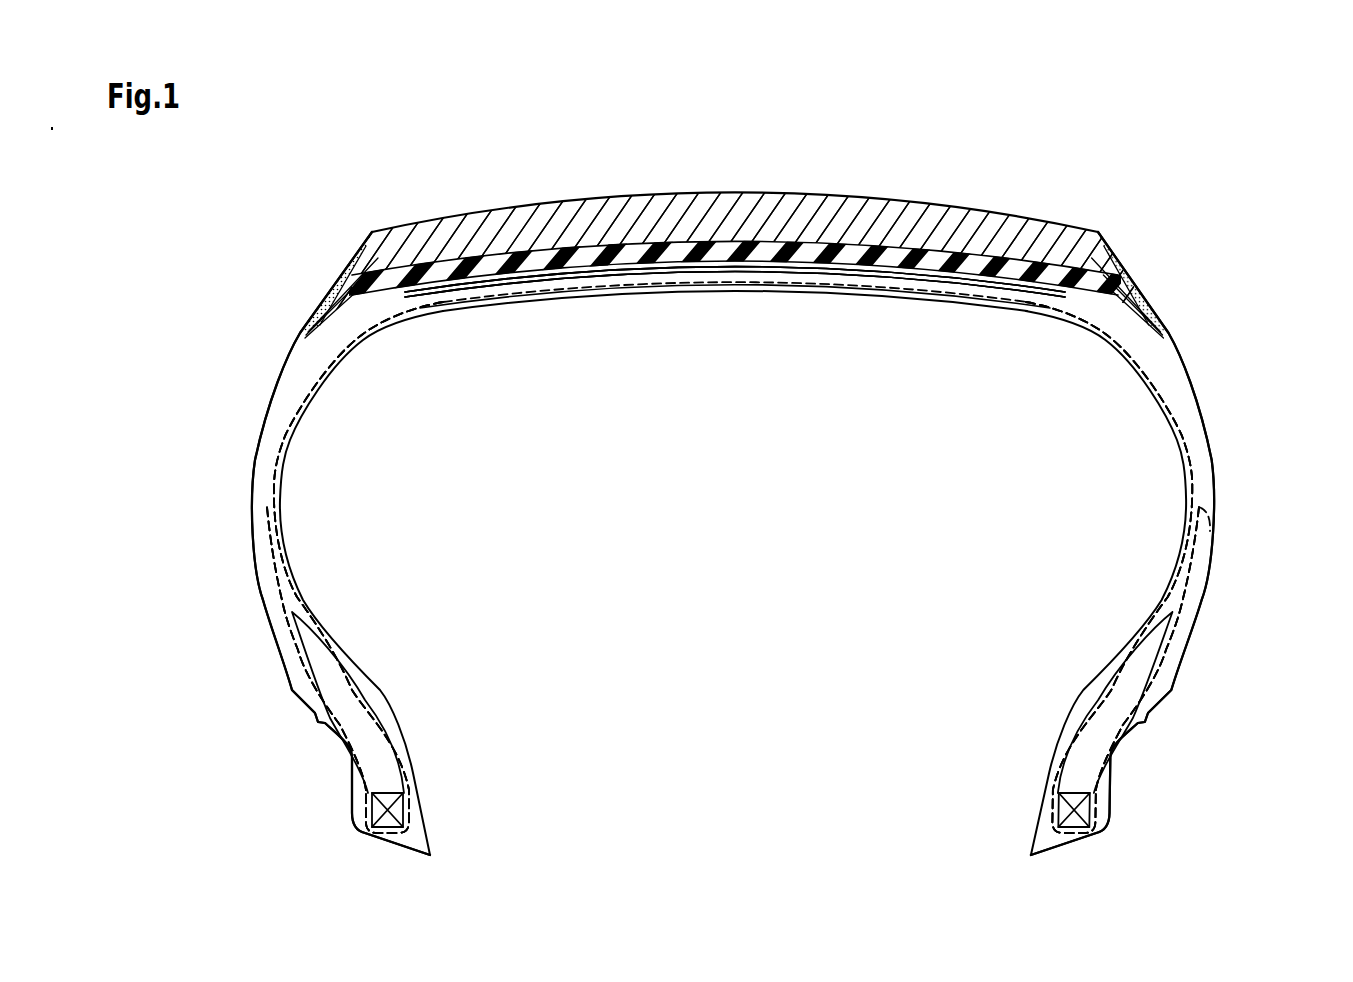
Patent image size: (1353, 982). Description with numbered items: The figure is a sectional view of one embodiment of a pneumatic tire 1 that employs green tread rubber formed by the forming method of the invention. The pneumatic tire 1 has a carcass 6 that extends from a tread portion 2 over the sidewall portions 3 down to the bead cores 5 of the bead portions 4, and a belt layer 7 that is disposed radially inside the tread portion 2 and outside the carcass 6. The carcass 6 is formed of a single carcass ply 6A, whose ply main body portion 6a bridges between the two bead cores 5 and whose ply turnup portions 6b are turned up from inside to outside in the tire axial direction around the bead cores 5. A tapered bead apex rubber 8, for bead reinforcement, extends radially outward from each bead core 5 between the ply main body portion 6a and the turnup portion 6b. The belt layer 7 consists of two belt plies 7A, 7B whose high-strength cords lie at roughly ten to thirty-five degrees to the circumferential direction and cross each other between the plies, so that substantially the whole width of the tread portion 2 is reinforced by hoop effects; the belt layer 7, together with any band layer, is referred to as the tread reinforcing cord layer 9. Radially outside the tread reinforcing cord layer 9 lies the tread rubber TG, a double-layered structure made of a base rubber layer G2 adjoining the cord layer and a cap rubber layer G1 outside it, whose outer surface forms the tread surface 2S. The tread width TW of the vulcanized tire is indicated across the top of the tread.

The pneumatic tire 1 is at (1198, 288).
The tread portion 2 is at (648, 224).
The tread surface 2S is at (578, 193).
The sidewall portion 3 is at (1237, 444).
The bead portion 4 is at (1021, 756).
The bead core 5 is at (1063, 812).
The carcass 6 is at (1055, 458).
The carcass ply 6A is at (734, 567).
The ply main body portion 6a is at (1183, 448).
The ply turnup portion 6b is at (1198, 503).
The belt layer 7 is at (668, 452).
The belt ply 7A is at (575, 274).
The belt ply 7B is at (637, 268).
The bead apex rubber 8 is at (1125, 685).
The tread reinforcing cord layer 9 is at (735, 386).
The cap rubber layer G1 is at (837, 200).
The base rubber layer G2 is at (845, 248).
The tread rubber TG is at (1008, 90).
The tread width TW is at (1103, 232).